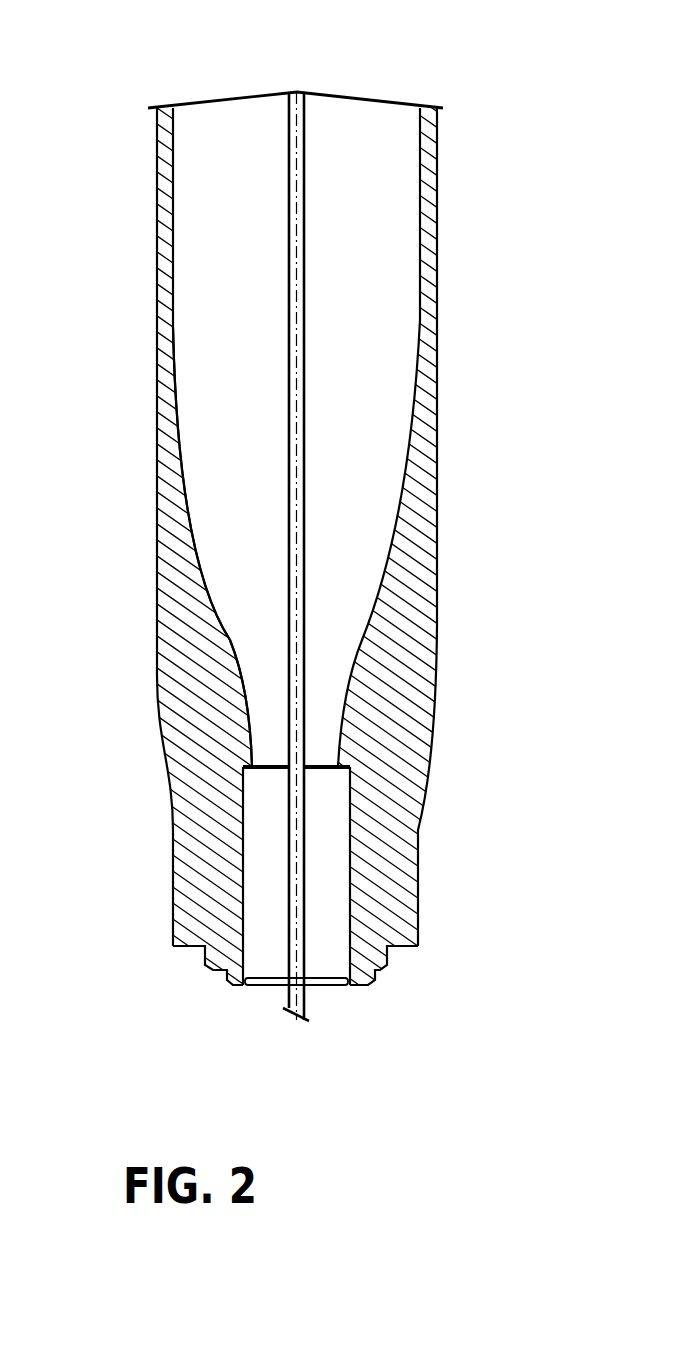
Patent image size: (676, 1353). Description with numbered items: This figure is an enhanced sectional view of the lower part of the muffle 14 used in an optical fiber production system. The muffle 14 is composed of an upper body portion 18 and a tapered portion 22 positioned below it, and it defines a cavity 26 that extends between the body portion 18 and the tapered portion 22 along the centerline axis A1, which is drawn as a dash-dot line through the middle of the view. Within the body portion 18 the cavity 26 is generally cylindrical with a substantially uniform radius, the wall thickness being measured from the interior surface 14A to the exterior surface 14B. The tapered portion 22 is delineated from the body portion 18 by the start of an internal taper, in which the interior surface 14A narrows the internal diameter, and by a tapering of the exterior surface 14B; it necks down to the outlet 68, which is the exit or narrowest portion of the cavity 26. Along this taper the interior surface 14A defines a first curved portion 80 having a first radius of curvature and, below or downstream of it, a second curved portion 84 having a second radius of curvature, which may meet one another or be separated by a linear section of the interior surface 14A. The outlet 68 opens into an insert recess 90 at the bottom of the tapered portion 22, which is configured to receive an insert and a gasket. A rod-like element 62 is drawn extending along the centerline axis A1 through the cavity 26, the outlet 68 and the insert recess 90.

The muffle 14 is at (447, 263).
The interior surface 14A is at (436, 418).
The exterior surface 14B is at (438, 333).
The body portion 18 is at (152, 198).
The tapered portion 22 is at (135, 754).
The cavity 26 is at (350, 288).
The needle 62 is at (287, 183).
The outlet 68 is at (309, 756).
The first curved portion 80 is at (185, 532).
The second curved portion 84 is at (230, 697).
The insert recess 90 is at (322, 889).
The centerline axis A1 is at (296, 110).